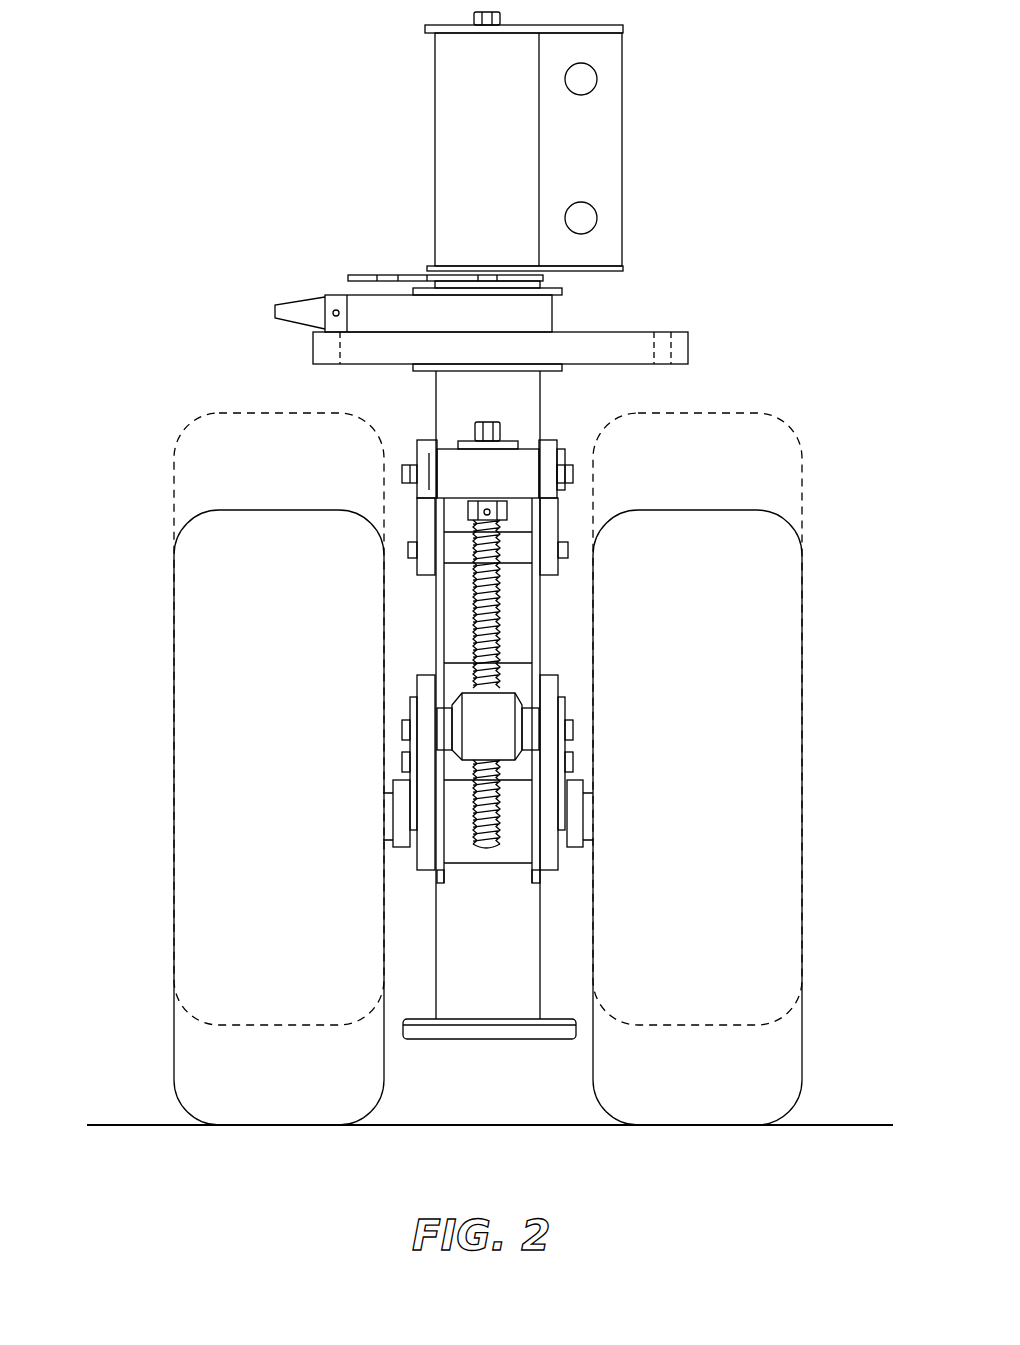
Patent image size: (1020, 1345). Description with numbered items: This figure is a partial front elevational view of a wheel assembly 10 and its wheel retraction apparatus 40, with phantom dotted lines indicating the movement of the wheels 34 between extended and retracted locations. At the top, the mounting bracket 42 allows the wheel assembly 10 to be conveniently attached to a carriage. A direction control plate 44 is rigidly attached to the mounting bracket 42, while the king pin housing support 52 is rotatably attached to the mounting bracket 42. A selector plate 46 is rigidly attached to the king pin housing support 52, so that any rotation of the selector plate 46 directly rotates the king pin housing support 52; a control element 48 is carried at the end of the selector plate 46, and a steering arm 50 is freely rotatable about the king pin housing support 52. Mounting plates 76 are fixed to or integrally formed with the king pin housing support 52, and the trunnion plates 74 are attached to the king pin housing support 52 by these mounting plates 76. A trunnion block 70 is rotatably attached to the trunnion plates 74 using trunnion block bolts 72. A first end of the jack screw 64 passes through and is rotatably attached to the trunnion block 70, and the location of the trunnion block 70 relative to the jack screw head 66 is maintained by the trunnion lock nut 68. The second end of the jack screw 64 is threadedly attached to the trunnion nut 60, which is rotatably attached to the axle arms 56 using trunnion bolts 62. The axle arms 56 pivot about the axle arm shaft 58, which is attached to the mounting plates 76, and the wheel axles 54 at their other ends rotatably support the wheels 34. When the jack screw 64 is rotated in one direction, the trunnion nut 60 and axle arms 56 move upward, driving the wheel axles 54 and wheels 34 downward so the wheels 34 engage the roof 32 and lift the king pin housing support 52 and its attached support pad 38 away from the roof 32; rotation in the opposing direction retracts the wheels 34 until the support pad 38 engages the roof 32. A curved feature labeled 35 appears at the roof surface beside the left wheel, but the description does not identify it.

The wheel assembly 10 is at (256, 135).
The roof 32 is at (810, 1125).
The wheels 34 is at (200, 655).
The ground curve 35 is at (165, 1125).
The support pad 38 is at (405, 1030).
The wheel retraction apparatus 40 is at (560, 425).
The mounting bracket 42 is at (598, 183).
The direction control plate 44 is at (350, 277).
The selector plate 46 is at (552, 312).
The control element 48 is at (285, 313).
The steering arm 50 is at (683, 337).
The king pin housing support 52 is at (450, 398).
The wheel axles 54 is at (390, 803).
The axle arms 56 is at (425, 860).
The axle arm shaft 58 is at (460, 770).
The trunnion nut 60 is at (510, 703).
The trunnion bolts 62 is at (403, 722).
The jack screw 64 is at (495, 605).
The jack screw head 66 is at (510, 420).
The trunnion lock nut 68 is at (500, 512).
The trunnion block 70 is at (452, 458).
The trunnion block bolts 72 is at (400, 470).
The trunnion plates 74 is at (425, 520).
The mounting plates 76 is at (440, 655).